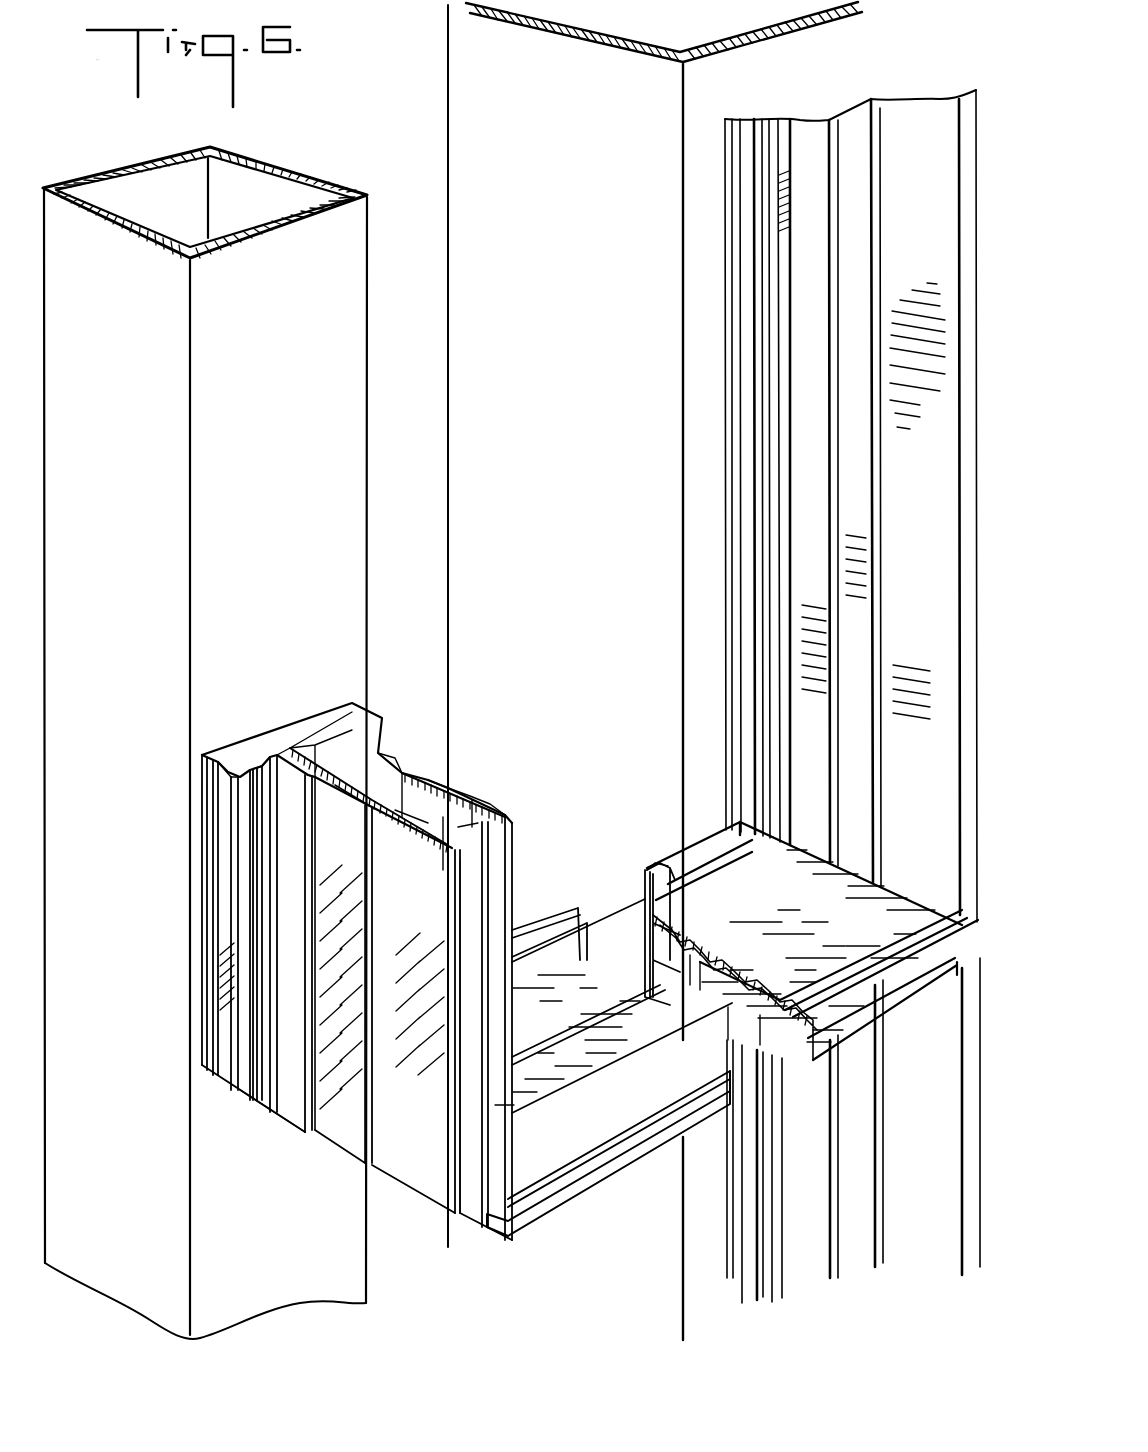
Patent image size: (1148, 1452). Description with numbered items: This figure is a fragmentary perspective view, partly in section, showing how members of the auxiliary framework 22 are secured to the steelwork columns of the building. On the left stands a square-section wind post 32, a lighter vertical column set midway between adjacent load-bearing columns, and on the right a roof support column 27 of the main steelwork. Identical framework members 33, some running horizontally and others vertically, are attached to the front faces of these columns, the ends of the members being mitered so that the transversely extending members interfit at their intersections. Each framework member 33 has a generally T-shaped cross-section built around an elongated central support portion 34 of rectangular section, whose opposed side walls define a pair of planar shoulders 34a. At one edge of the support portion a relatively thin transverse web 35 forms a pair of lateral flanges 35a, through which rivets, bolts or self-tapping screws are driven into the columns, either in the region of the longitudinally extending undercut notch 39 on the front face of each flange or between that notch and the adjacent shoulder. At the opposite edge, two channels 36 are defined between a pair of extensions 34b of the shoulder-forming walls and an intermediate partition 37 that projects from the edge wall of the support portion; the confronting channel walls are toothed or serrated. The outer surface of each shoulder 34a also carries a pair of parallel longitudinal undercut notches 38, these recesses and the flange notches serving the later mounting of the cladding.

The auxiliary framework 22 is at (619, 1198).
The roof support column 27 is at (656, 246).
The wind post 32 is at (357, 410).
The framework member 33 is at (802, 566).
The central support portion 34 is at (448, 790).
The shoulder 34a is at (395, 760).
The extension 34b is at (505, 886).
The transverse web 35 is at (293, 745).
The lateral flange 35a is at (232, 770).
The channel 36 is at (470, 795).
The intermediate partition 37 is at (470, 1217).
The undercut notch 38 is at (882, 560).
The undercut notch 39 is at (768, 662).